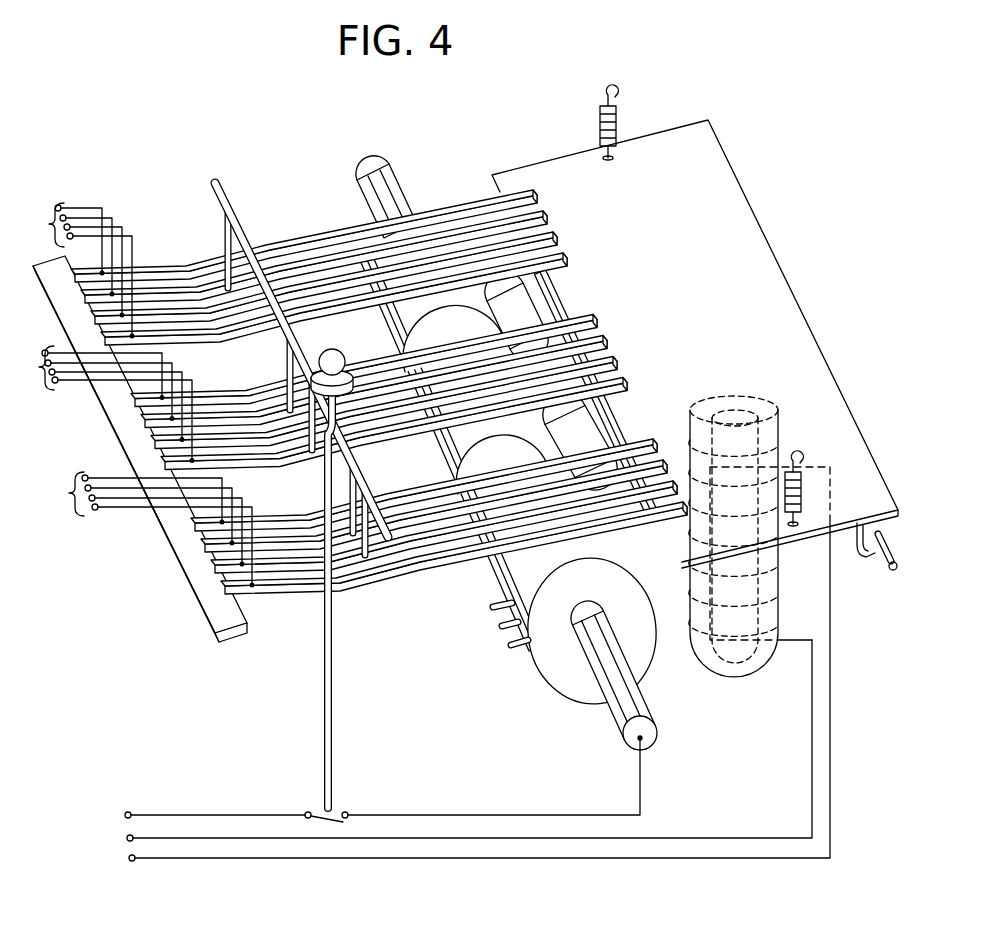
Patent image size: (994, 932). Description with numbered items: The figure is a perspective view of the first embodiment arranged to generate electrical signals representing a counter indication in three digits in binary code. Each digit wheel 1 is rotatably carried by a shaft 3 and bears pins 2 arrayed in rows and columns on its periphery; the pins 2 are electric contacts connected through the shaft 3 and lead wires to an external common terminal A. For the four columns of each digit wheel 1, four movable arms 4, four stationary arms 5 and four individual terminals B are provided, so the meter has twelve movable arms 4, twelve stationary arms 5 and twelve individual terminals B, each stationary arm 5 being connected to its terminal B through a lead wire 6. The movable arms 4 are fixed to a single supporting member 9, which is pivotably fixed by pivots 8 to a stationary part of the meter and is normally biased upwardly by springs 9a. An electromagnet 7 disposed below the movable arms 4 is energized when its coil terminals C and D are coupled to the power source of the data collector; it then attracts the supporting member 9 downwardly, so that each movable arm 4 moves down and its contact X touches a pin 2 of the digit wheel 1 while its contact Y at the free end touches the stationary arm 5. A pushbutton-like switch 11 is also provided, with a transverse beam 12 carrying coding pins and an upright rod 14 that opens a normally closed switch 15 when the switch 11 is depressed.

The digit wheel 1 is at (556, 670).
The pins 2 is at (510, 637).
The shaft 3 is at (623, 712).
The movable arm 4 is at (651, 528).
The stationary arm 5 is at (171, 292).
The lead wire 6 is at (88, 215).
The electromagnet 7 is at (780, 586).
The pivot 8 is at (886, 562).
The supporting member 9 is at (672, 142).
The spring 9a is at (598, 122).
The pushbutton-like switch 11 is at (336, 352).
The transverse beam 12 is at (232, 212).
The upright rod 14 is at (322, 692).
The normally closed switch 15 is at (336, 814).
The common terminal A is at (372, 784).
The individual terminal B is at (51, 359).
The terminal C is at (457, 746).
The terminal D is at (466, 699).
The electric contact X is at (565, 558).
The electric contact Y is at (444, 560).